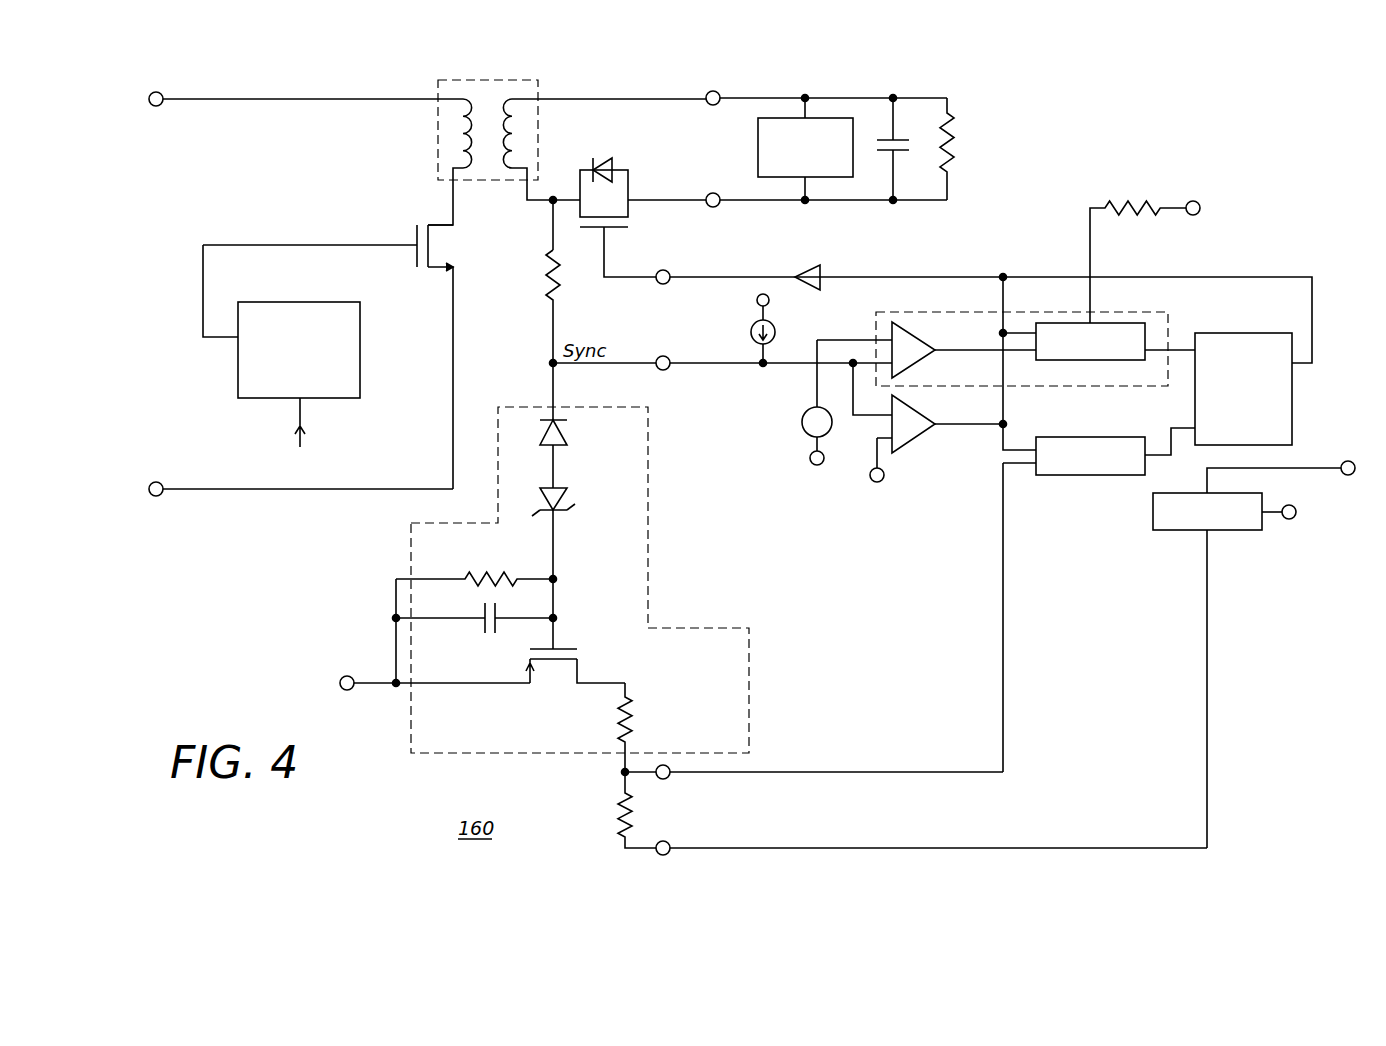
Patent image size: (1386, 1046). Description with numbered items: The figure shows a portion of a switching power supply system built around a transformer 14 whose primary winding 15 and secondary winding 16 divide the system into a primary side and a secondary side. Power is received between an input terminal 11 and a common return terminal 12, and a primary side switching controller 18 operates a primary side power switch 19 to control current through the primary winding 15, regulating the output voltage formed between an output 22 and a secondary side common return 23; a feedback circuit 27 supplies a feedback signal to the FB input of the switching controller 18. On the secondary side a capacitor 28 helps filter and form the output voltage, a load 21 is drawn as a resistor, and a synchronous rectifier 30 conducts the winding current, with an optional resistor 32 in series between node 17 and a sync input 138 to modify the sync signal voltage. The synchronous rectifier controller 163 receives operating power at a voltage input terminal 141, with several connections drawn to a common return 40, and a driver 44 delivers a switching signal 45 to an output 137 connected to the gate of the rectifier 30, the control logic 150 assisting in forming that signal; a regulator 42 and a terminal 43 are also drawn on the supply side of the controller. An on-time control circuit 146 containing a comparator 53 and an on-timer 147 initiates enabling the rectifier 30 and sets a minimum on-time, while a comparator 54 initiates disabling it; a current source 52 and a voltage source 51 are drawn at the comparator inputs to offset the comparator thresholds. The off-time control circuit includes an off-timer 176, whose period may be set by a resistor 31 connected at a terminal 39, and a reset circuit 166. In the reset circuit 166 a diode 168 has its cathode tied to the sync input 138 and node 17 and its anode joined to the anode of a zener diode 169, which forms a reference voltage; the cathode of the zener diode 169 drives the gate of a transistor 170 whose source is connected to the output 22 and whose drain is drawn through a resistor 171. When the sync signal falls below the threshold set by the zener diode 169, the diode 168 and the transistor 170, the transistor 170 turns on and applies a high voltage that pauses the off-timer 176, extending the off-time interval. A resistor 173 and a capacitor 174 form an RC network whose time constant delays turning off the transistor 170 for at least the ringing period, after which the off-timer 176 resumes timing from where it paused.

The input terminal 11 is at (160, 106).
The common return terminal 12 is at (160, 496).
The transformer 14 is at (448, 80).
The primary winding 15 is at (463, 150).
The secondary winding 16 is at (517, 135).
The node 17 is at (556, 196).
The primary side switching controller 18 is at (271, 302).
The primary side power switch 19 is at (416, 235).
The load 21 is at (952, 128).
The output 22 is at (717, 90).
The secondary side common return 23 is at (712, 190).
The feedback circuit 27 is at (758, 137).
The capacitor 28 is at (903, 146).
The synchronous rectifier 30 is at (625, 178).
The resistor 31 is at (617, 806).
The resistor 32 is at (549, 282).
The terminal 39 is at (670, 783).
The ground terminal 40 is at (656, 855).
The regulator 42 is at (1190, 533).
The current source 43 is at (770, 305).
The driver 44 is at (794, 277).
The switching signal 45 is at (860, 278).
The voltage source 51 is at (801, 420).
The current source 52 is at (756, 345).
The comparator 53 is at (920, 340).
The comparator 54 is at (914, 443).
The output 137 is at (659, 285).
The sync input 138 is at (659, 372).
The voltage input terminal 141 is at (1351, 461).
The on-time control circuit 146 is at (1112, 318).
The on-timer 147 is at (1080, 362).
The control logic 150 is at (1255, 333).
The synchronous rectifier controller 163 is at (398, 786).
The reset circuit 166 is at (478, 757).
The diode 168 is at (570, 430).
The zener diode 169 is at (570, 515).
The transistor 170 is at (556, 686).
The resistor 171 is at (634, 713).
The resistor 173 is at (490, 578).
The capacitor 174 is at (486, 630).
The off-timer 176 is at (1090, 478).